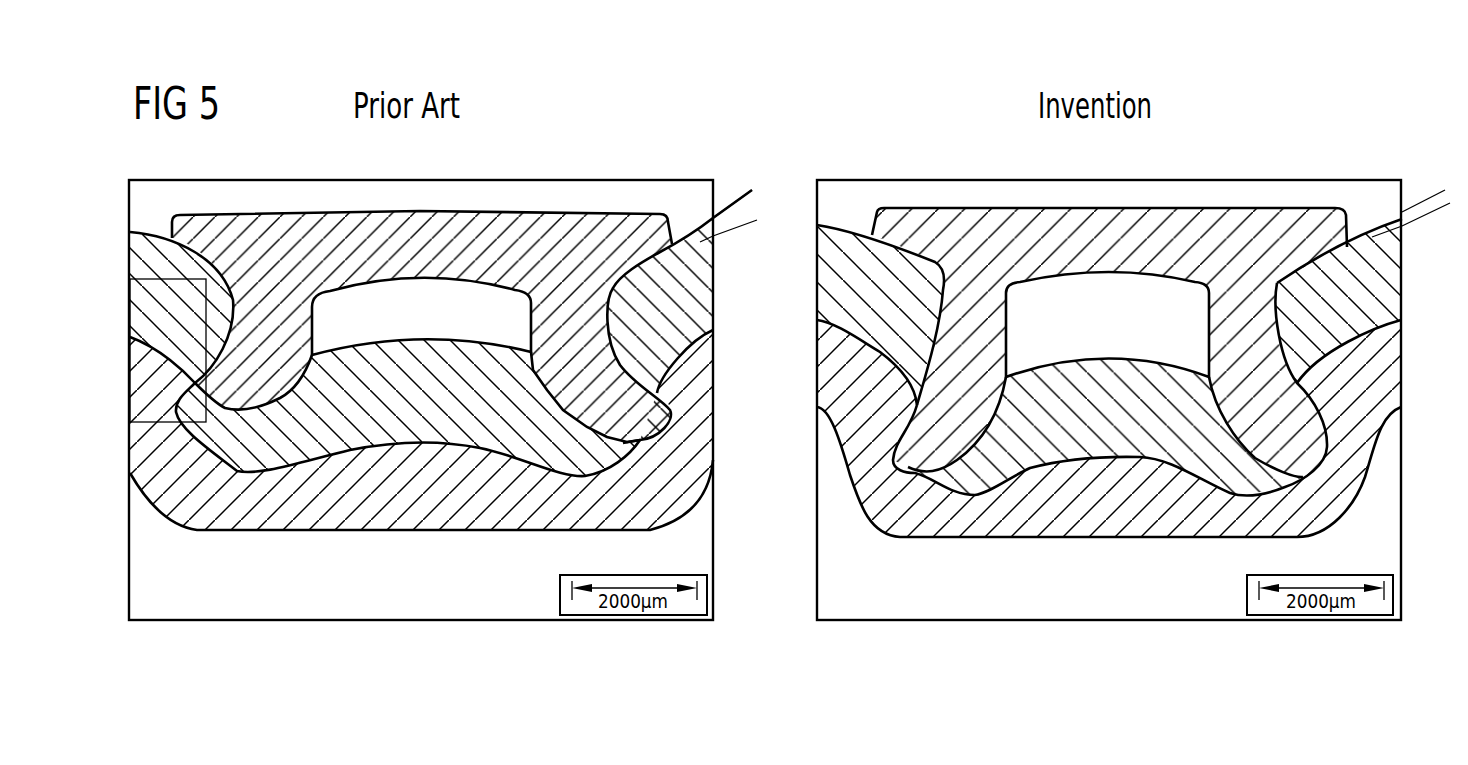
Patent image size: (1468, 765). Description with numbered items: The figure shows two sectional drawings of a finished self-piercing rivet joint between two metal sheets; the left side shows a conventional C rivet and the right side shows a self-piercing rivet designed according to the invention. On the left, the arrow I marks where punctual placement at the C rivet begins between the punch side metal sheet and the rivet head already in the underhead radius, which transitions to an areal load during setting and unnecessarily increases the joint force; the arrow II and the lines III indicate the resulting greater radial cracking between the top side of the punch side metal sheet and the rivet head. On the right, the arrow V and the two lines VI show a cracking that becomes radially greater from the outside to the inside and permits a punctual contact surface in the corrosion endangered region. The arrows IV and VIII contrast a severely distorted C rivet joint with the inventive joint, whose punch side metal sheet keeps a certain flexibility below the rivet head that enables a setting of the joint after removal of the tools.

The arrow I is at (609, 275).
The arrow II is at (677, 216).
The lines III is at (737, 188).
The arrow IV is at (171, 444).
The arrow V is at (1297, 230).
The lines VI is at (1424, 200).
The arrow VIII is at (875, 358).